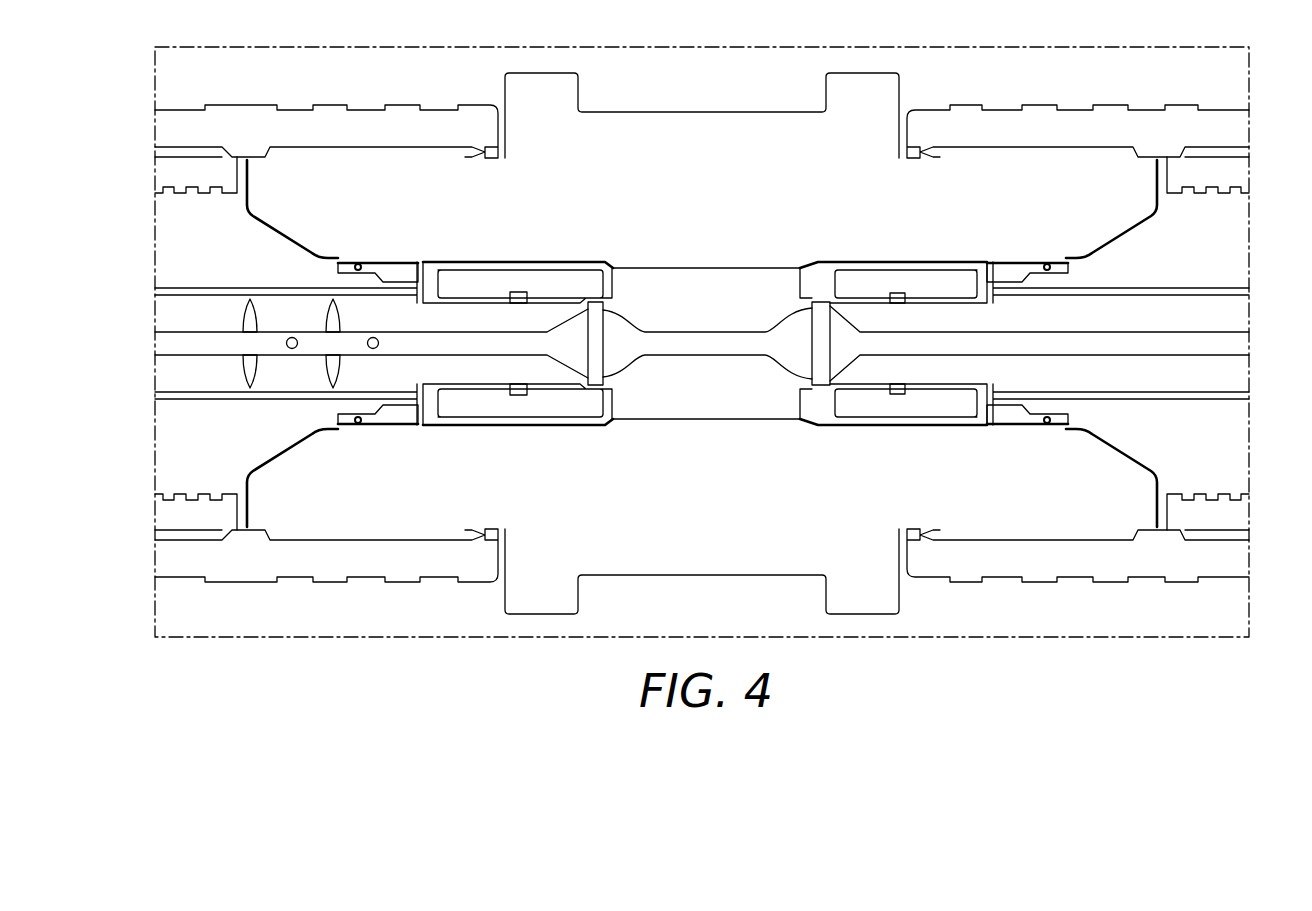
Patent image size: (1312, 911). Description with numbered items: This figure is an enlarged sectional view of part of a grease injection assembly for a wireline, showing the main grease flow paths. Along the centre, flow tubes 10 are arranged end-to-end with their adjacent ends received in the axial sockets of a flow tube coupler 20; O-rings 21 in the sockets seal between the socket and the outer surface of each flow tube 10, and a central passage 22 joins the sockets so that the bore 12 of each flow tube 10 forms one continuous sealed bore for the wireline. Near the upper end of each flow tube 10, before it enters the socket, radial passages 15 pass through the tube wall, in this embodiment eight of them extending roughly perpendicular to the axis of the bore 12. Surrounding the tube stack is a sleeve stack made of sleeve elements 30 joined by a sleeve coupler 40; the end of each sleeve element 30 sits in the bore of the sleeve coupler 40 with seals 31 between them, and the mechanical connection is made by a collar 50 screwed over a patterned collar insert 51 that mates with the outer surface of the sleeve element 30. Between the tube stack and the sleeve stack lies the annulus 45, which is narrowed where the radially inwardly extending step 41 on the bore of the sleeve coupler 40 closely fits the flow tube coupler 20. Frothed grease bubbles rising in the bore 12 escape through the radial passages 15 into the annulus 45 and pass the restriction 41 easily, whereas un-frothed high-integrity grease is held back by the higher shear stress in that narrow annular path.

The flow tube 10 is at (167, 315).
The bore 12 is at (167, 343).
The radial passages 15 is at (240, 312).
The flow tube coupler 20 is at (712, 314).
The O-ring 21 is at (517, 290).
The central passage 22 is at (667, 340).
The sleeve element 30 is at (167, 234).
The seal 31 is at (358, 426).
The sleeve coupler 40 is at (703, 128).
The radially inwardly extending step 41 is at (730, 258).
The annulus 45 is at (428, 410).
The collar 50 is at (233, 128).
The collar insert 51 is at (167, 171).